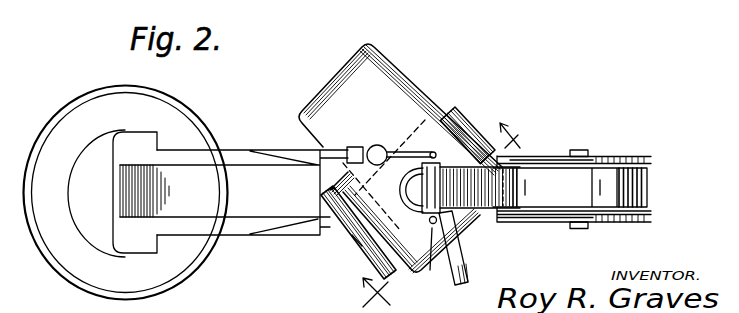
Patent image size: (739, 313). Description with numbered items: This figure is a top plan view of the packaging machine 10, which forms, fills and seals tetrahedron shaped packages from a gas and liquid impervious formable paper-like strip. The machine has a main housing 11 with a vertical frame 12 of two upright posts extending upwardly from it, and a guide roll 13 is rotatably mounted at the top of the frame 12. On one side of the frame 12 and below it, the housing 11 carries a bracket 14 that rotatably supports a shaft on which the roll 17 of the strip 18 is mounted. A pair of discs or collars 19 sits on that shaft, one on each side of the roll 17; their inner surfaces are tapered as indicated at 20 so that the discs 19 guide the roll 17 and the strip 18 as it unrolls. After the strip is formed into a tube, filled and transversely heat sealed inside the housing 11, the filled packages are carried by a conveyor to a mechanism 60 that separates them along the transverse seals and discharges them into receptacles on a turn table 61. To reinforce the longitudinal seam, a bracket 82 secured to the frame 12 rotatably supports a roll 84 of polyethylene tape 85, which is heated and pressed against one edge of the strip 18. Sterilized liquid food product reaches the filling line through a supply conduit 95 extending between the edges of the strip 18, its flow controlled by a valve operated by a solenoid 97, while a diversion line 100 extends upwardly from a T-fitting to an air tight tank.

The packaging machine 10 is at (431, 74).
The main housing 11 is at (421, 111).
The vertical frame 12 is at (450, 115).
The guide roll 13 is at (413, 207).
The bracket 14 is at (552, 158).
The roll 17 is at (640, 192).
The strip 18 is at (352, 240).
The discs or collars 19 is at (612, 160).
The tapered inner surfaces 20 is at (451, 212).
The separating mechanism 60 is at (128, 193).
The turn table 61 is at (58, 238).
The bracket 82 is at (511, 208).
The roll of polyethylene tape 84 is at (470, 272).
The polyethylene tape 85 is at (430, 248).
The supply conduit 95 is at (403, 170).
The solenoid 97 is at (376, 145).
The diversion line 100 is at (355, 147).